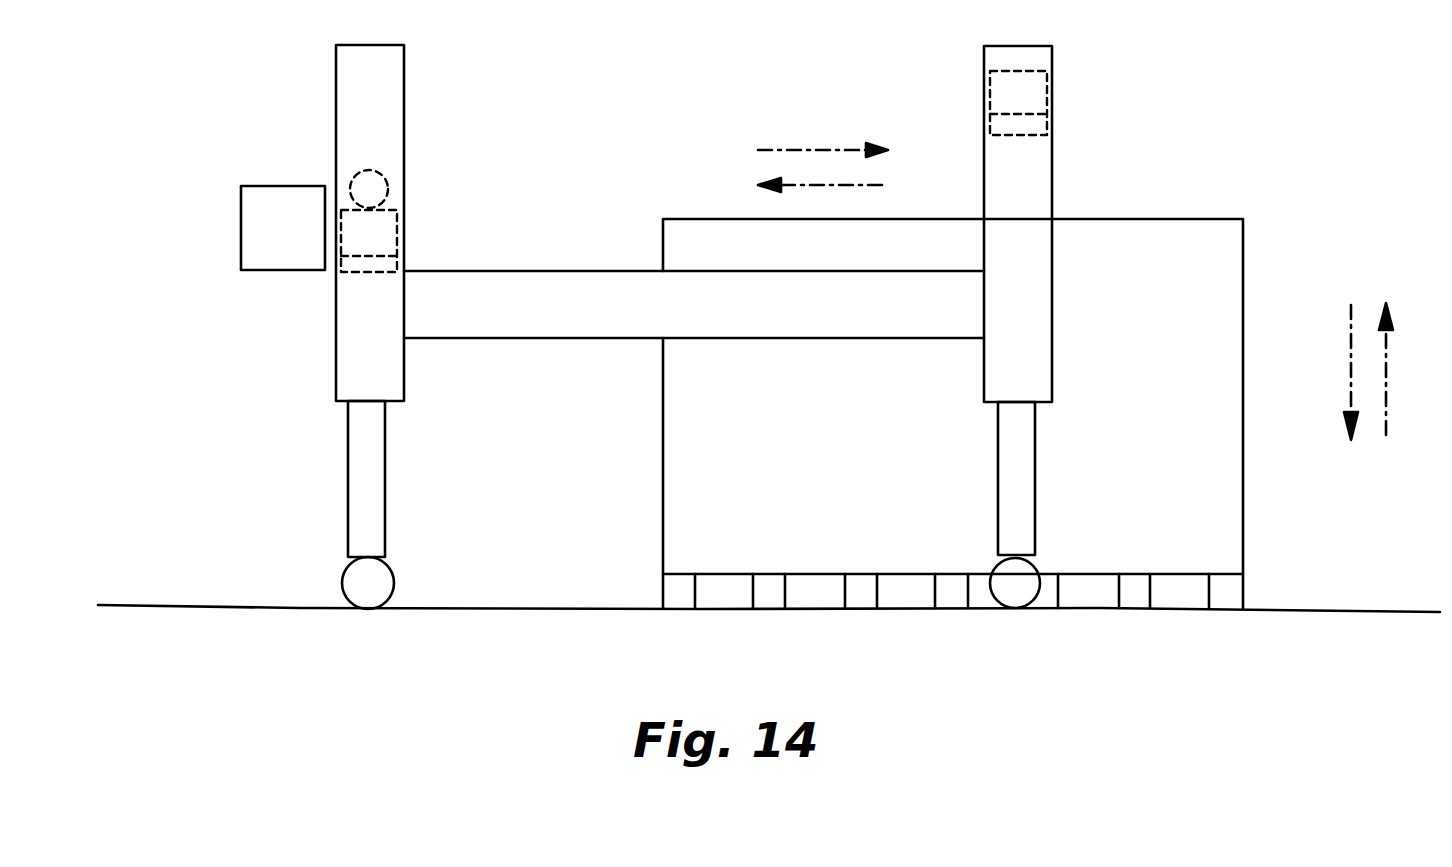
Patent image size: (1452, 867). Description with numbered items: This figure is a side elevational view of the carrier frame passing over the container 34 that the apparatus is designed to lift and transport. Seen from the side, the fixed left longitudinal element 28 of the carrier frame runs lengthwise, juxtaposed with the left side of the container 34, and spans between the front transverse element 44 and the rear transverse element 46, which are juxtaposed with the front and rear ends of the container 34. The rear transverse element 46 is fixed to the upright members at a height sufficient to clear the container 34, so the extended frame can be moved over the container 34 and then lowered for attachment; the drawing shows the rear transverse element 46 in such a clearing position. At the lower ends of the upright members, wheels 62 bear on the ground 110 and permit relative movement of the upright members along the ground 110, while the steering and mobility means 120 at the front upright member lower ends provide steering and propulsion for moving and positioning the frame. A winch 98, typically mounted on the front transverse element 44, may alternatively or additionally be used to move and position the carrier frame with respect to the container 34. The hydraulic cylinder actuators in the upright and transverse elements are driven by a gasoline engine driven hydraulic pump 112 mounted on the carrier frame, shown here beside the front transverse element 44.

The left longitudinal element 28 is at (527, 303).
The container 34 is at (1122, 219).
The front transverse element 44 is at (369, 241).
The rear transverse element 46 is at (1018, 103).
The wheel 62 is at (1039, 594).
The winch 98 is at (383, 171).
The ground 110 is at (1293, 608).
The hydraulic pump 112 is at (266, 240).
The steering and mobility means 120 is at (395, 582).